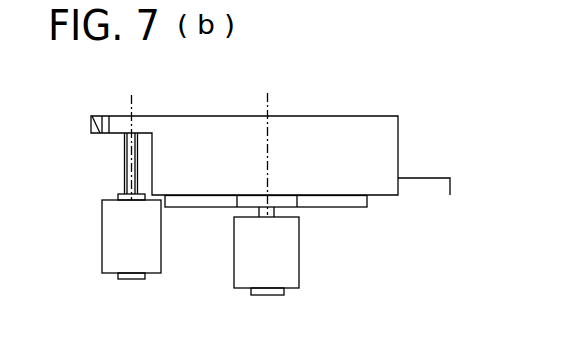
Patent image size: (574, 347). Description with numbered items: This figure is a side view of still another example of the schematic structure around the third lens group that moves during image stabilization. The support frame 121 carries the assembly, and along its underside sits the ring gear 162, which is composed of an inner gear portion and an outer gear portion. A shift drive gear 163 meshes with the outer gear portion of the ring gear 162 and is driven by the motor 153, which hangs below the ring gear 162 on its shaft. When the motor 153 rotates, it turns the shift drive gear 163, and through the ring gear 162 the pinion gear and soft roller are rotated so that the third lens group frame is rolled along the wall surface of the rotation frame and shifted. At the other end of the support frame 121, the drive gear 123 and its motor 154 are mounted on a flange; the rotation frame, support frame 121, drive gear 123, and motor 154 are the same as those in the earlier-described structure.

The support frame 121 is at (392, 126).
The drive gear 123 is at (92, 115).
The motor 153 is at (299, 258).
The motor 154 is at (102, 236).
The ring gear 162 is at (352, 208).
The shift drive gear 163 is at (281, 200).